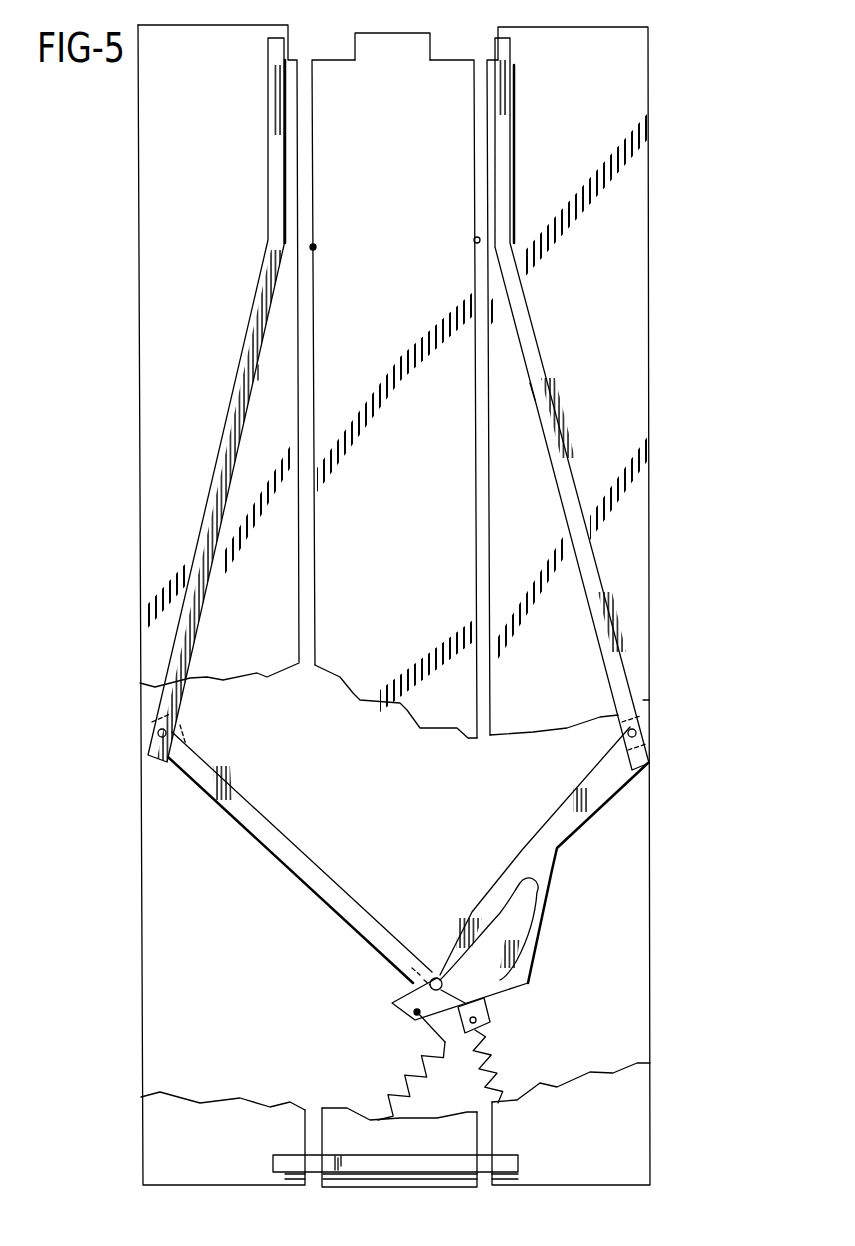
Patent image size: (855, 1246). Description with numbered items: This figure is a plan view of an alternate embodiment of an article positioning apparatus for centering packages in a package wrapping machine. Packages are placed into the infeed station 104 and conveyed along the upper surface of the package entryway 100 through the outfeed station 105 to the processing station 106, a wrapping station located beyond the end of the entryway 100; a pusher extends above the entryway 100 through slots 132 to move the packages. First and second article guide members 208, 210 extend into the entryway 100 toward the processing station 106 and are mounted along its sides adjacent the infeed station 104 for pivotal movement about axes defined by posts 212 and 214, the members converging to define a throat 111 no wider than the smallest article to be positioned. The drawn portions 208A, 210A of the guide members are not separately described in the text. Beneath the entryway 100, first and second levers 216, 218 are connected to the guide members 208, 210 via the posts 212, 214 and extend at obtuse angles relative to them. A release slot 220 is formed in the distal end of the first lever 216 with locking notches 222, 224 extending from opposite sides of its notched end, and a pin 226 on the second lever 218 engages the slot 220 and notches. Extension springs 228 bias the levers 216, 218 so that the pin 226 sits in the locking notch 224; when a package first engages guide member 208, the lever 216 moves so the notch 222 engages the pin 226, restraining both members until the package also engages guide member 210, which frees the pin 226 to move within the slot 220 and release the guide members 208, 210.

The package entryway 100 is at (660, 422).
The package infeed station 104 is at (312, 1012).
The outfeed station 105 is at (420, 195).
The article processing station 106 is at (412, 26).
The throat 111 is at (494, 113).
The slots 132 is at (474, 240).
The first article guide member 208 is at (568, 450).
The right channel inner leg 208A is at (530, 383).
The second article guide member 210 is at (232, 422).
The left channel inner leg 210A is at (258, 365).
The post 212 is at (640, 724).
The post 214 is at (175, 713).
The first lever 216 is at (557, 817).
The second lever 218 is at (297, 848).
The release slot 220 is at (522, 920).
The locking notch 222 is at (505, 990).
The locking notch 224 is at (427, 967).
The pin 226 is at (438, 977).
The extension springs 228 is at (400, 1073).